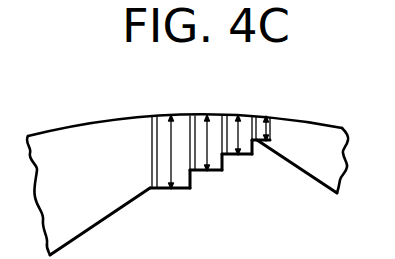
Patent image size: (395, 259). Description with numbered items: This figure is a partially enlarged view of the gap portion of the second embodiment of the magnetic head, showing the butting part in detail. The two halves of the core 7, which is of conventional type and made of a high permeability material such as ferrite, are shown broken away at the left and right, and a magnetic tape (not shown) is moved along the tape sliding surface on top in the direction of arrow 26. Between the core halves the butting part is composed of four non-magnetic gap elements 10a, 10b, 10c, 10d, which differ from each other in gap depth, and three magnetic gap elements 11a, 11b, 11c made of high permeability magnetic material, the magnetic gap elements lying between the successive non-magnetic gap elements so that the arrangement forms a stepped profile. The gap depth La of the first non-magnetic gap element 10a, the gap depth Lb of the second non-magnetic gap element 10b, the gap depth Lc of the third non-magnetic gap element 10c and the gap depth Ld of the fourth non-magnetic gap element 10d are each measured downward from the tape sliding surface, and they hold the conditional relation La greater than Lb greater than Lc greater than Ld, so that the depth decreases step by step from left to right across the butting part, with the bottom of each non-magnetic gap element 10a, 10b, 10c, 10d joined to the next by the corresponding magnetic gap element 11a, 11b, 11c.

The core 7 is at (70, 133).
The arrow 26 is at (222, 75).
The non-magnetic gap element 10a is at (157, 189).
The non-magnetic gap element 10b is at (193, 172).
The non-magnetic gap element 10c is at (225, 157).
The non-magnetic gap element 10d is at (258, 145).
The magnetic gap element 11a is at (177, 188).
The magnetic gap element 11b is at (221, 168).
The magnetic gap element 11c is at (253, 150).
The gap depth La is at (170, 126).
The gap depth Lb is at (207, 124).
The gap depth Lc is at (238, 121).
The gap depth Ld is at (267, 119).